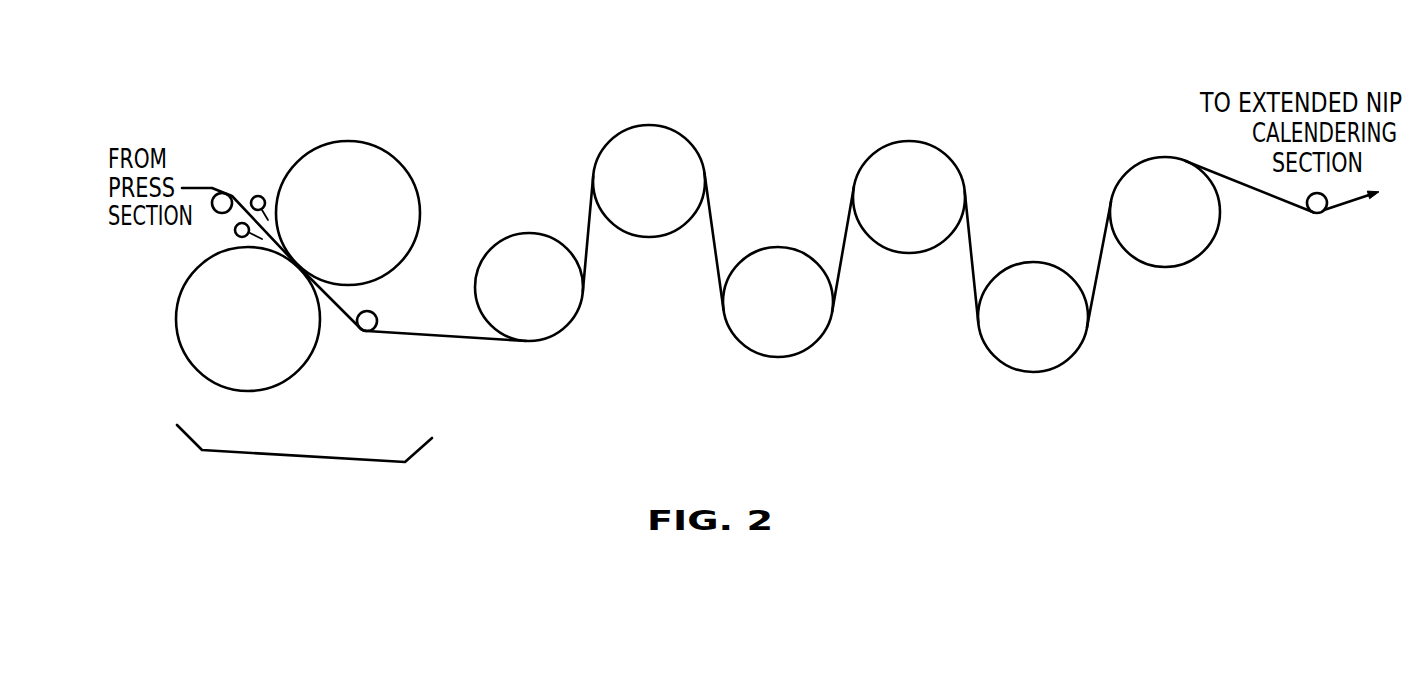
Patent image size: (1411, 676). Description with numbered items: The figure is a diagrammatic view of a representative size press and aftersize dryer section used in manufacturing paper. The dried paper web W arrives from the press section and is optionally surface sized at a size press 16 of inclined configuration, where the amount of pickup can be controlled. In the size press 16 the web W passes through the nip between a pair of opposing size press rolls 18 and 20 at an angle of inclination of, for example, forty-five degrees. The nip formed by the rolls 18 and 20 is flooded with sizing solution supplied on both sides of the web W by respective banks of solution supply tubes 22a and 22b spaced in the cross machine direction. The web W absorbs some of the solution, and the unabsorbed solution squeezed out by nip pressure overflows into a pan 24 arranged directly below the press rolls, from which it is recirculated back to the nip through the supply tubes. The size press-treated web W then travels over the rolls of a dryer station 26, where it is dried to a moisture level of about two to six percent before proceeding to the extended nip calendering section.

The size press 16 is at (312, 92).
The size press roll 18 is at (371, 145).
The size press roll 20 is at (201, 374).
The solution supply tubes 22a is at (256, 196).
The solution supply tubes 22b is at (235, 231).
The pan 24 is at (187, 440).
The dryer station 26 is at (944, 104).
The web W is at (432, 337).